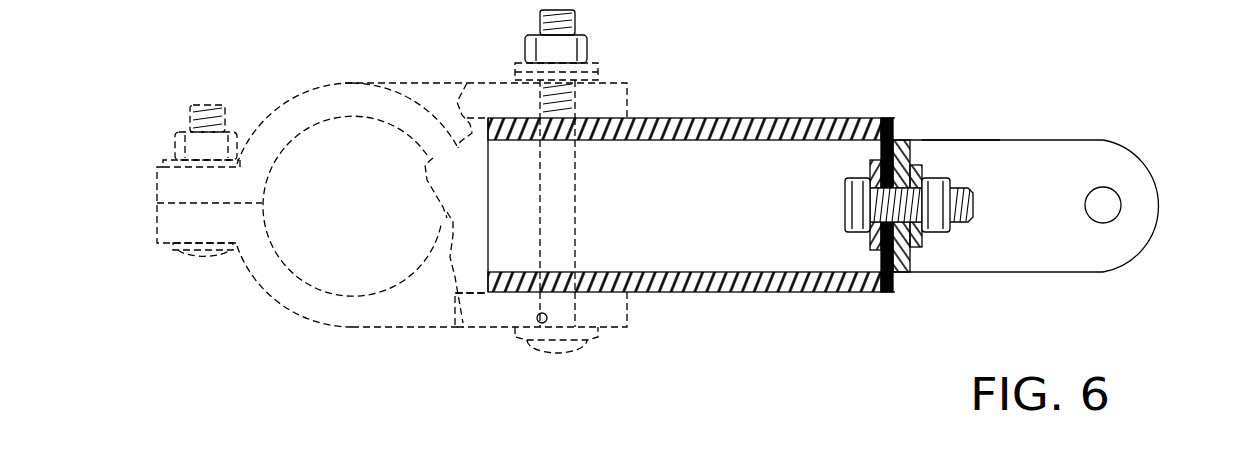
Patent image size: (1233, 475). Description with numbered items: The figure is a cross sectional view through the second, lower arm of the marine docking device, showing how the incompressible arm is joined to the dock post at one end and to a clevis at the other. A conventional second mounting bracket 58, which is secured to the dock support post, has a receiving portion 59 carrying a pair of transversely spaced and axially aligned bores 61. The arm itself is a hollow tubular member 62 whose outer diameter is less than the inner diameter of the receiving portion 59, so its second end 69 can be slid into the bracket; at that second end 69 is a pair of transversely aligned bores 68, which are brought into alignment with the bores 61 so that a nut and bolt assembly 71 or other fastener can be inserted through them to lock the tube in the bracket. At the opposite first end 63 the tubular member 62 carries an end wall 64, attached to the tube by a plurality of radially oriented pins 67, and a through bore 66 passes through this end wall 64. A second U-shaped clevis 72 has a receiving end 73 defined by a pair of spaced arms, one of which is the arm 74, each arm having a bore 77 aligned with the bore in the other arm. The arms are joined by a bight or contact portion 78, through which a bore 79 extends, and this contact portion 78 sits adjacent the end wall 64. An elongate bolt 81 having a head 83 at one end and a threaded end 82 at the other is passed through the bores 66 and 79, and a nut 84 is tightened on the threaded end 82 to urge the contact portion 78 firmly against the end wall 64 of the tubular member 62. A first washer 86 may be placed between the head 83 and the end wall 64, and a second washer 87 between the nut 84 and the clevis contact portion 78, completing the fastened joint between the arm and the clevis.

The second mounting bracket 58 is at (323, 87).
The receiving portion 59 is at (612, 330).
The bores 61 is at (578, 96).
The hollow tubular member 62 is at (732, 287).
The first end 63 is at (867, 290).
The end wall 64 is at (903, 140).
The through bore 66 is at (867, 227).
The radially oriented pins 67 is at (893, 277).
The bores 68 is at (542, 283).
The second end 69 is at (493, 287).
The nut and bolt assembly 71 is at (562, 357).
The second U-shaped clevis 72 is at (1072, 155).
The receiving end 73 is at (1133, 238).
The arm 74 is at (1083, 258).
The bore 77 is at (1110, 193).
The contact portion 78 is at (910, 158).
The bore 79 is at (923, 175).
The elongate bolt 81 is at (886, 142).
The threaded end 82 is at (937, 205).
The head 83 is at (847, 207).
The nut 84 is at (965, 202).
The first washer 86 is at (868, 162).
The second washer 87 is at (927, 240).